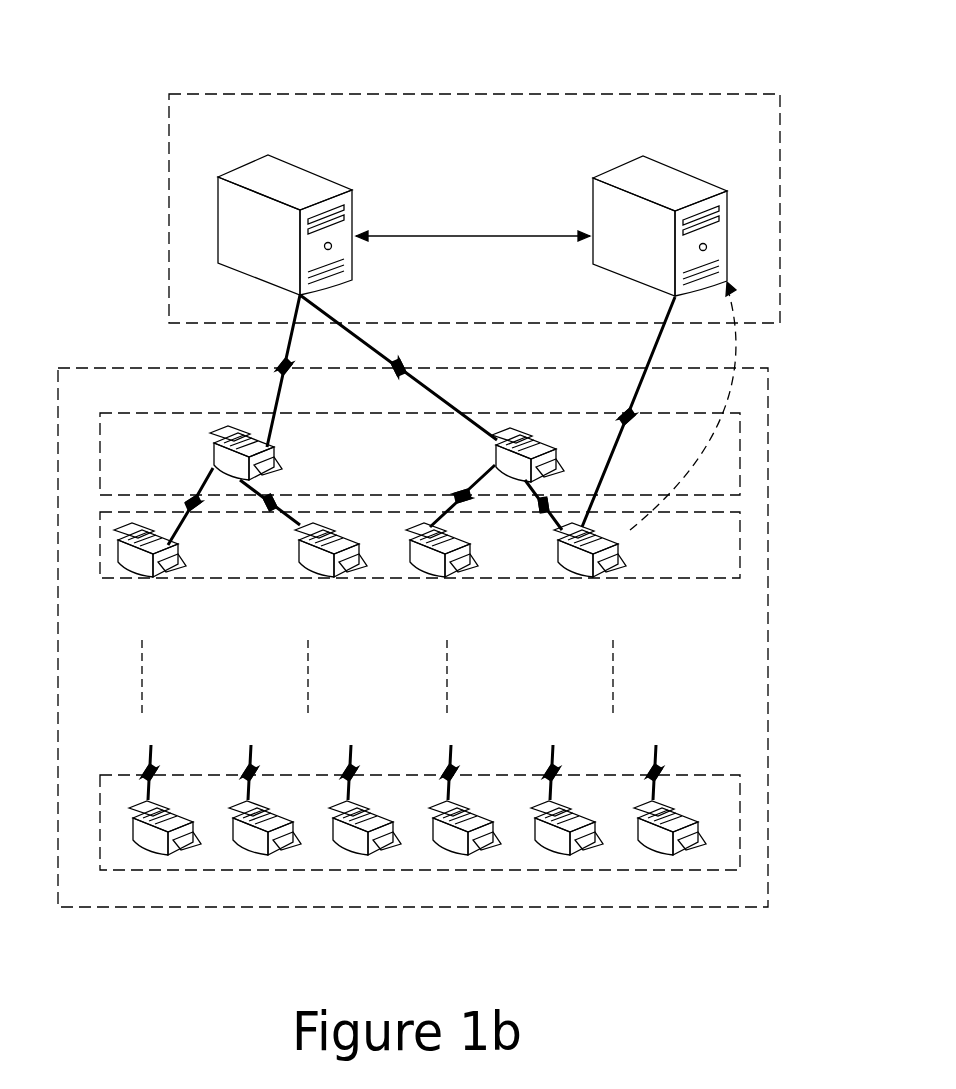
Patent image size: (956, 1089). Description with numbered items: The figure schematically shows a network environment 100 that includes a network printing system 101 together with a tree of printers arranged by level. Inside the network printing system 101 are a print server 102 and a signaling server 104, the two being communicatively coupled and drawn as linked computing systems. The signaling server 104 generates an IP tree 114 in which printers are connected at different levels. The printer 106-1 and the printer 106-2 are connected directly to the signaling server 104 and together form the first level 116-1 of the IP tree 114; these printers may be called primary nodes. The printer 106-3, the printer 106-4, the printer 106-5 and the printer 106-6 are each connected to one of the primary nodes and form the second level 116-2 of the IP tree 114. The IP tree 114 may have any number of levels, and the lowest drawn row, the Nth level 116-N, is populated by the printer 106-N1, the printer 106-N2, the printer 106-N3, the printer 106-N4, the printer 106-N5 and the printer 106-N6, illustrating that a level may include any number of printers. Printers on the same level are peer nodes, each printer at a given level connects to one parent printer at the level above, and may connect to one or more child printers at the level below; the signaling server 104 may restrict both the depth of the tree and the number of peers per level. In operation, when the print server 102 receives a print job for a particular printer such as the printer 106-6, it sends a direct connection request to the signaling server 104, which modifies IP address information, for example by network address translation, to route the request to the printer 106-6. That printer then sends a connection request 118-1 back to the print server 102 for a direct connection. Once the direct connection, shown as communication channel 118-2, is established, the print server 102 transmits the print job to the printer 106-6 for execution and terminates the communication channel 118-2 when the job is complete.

The network environment 100 is at (493, 58).
The network printing system 101 is at (732, 94).
The print server 102 is at (645, 158).
The signaling server 104 is at (268, 155).
The printer 106-1 is at (213, 427).
The printer 106-2 is at (520, 428).
The printer 106-3 is at (150, 578).
The printer 106-4 is at (330, 578).
The printer 106-5 is at (440, 578).
The printer 106-6 is at (588, 578).
The printer 106-N1 is at (165, 853).
The printer 106-N2 is at (263, 853).
The printer 106-N3 is at (363, 853).
The printer 106-N4 is at (463, 853).
The printer 106-N5 is at (565, 853).
The printer 106-N6 is at (668, 853).
The IP tree 114 is at (752, 368).
The first level 116-1 is at (742, 468).
The second level 116-2 is at (742, 550).
The Nth level 116-N is at (739, 830).
The connection request 118-1 is at (637, 530).
The communication channel 118-2 is at (625, 420).